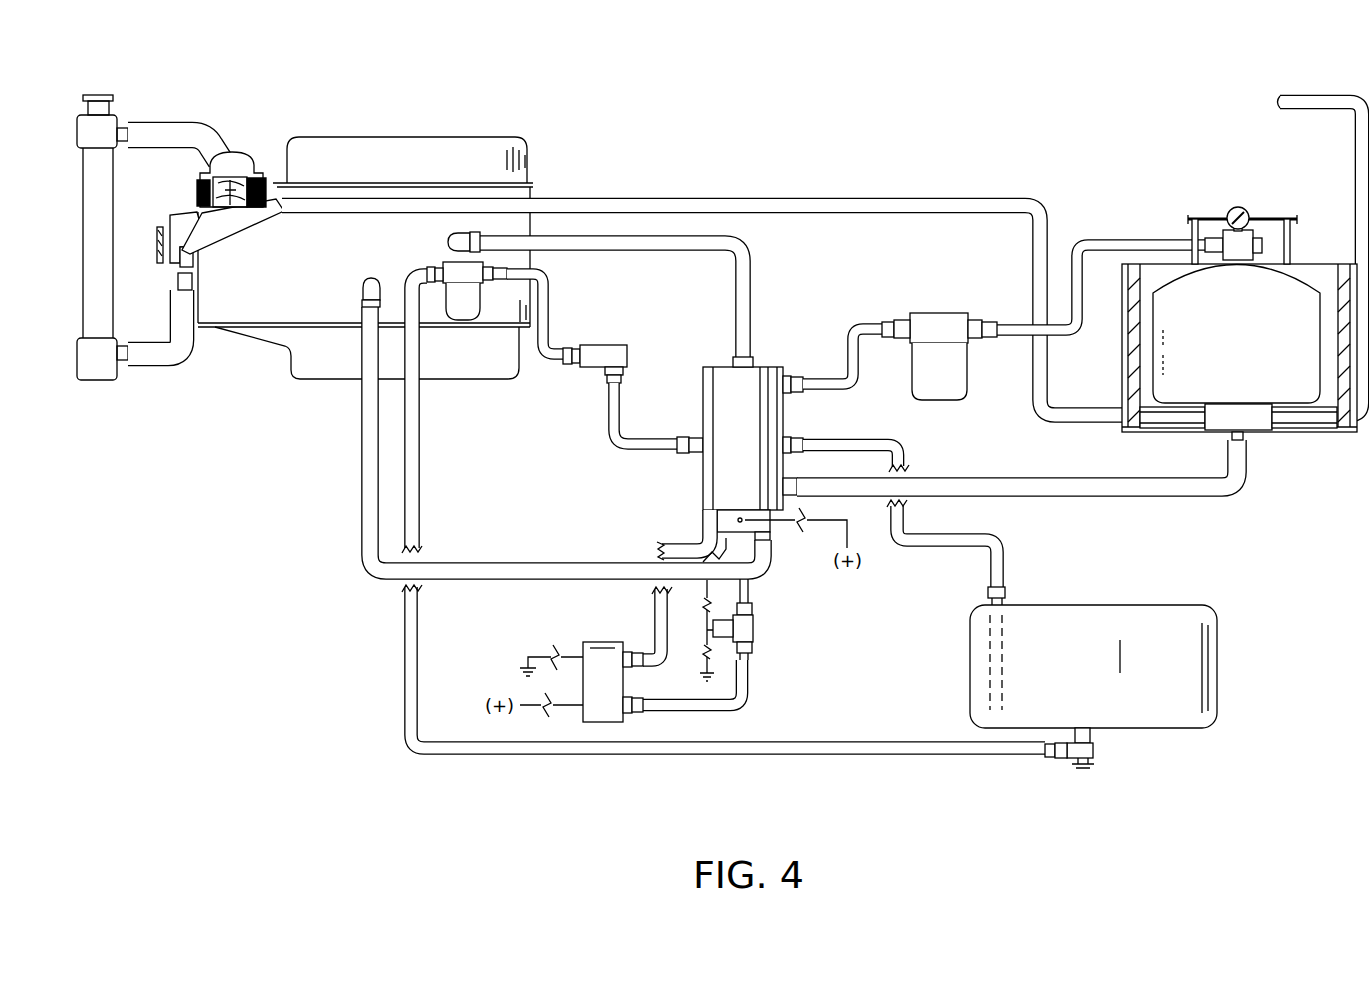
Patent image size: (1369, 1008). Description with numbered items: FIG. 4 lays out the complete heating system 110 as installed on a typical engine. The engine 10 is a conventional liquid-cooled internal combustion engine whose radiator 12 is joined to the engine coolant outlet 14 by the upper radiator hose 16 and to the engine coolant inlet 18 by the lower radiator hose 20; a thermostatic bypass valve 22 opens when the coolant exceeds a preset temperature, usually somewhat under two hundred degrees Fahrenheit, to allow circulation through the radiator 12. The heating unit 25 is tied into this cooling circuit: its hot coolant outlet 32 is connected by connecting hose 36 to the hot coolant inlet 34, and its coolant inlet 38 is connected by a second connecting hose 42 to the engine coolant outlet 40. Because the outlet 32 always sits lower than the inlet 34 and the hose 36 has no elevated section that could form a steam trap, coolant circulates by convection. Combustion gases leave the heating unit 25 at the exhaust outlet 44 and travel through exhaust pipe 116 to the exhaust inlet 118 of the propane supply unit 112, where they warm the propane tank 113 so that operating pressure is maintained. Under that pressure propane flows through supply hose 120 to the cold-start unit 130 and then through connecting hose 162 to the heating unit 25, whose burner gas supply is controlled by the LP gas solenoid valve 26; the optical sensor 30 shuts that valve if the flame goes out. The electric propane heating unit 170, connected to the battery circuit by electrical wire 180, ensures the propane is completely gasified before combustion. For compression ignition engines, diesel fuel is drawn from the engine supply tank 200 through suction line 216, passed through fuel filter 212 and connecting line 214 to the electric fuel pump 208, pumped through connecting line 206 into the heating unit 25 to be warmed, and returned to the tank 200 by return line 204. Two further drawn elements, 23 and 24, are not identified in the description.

The engine 10 is at (405, 137).
The radiator 12 is at (83, 107).
The engine coolant outlet 14 is at (257, 163).
The upper radiator hose 16 is at (160, 123).
The engine coolant inlet 18 is at (172, 282).
The lower radiator hose 20 is at (157, 367).
The thermostatic bypass valve 22 is at (247, 160).
The fitting 23 is at (170, 237).
The heater hose 24 is at (1280, 97).
The heating unit 25 is at (720, 367).
The LP gas solenoid valve 26 is at (757, 625).
The optical sensor 30 is at (700, 537).
The hot coolant outlet 32 is at (753, 360).
The hot coolant inlet 34 is at (463, 230).
The connecting hose 36 is at (757, 260).
The coolant inlet 38 is at (770, 537).
The engine coolant outlet 40 is at (367, 280).
The second connecting hose 42 is at (362, 413).
The exhaust outlet 44 is at (788, 470).
The system 110 is at (738, 100).
The propane (LNG) supply unit 112 is at (1245, 321).
The propane (LNG) tank 113 is at (1283, 287).
The exhaust pipe 116 is at (1140, 498).
The exhaust inlet 118 is at (1247, 433).
The supply hose 120 is at (1157, 240).
The cold-start unit 130 is at (925, 315).
The connecting hose 162 is at (850, 300).
The electric propane (LNG) heating unit 170 is at (602, 642).
The electrical wire 180 is at (537, 655).
The engine supply tank 200 is at (1217, 645).
The return line 204 is at (905, 455).
The connecting line 206 is at (610, 427).
The electric fuel pump 208 is at (597, 347).
The fuel filter 212 is at (450, 260).
The connecting line 214 is at (548, 307).
The suction line 216 is at (418, 470).